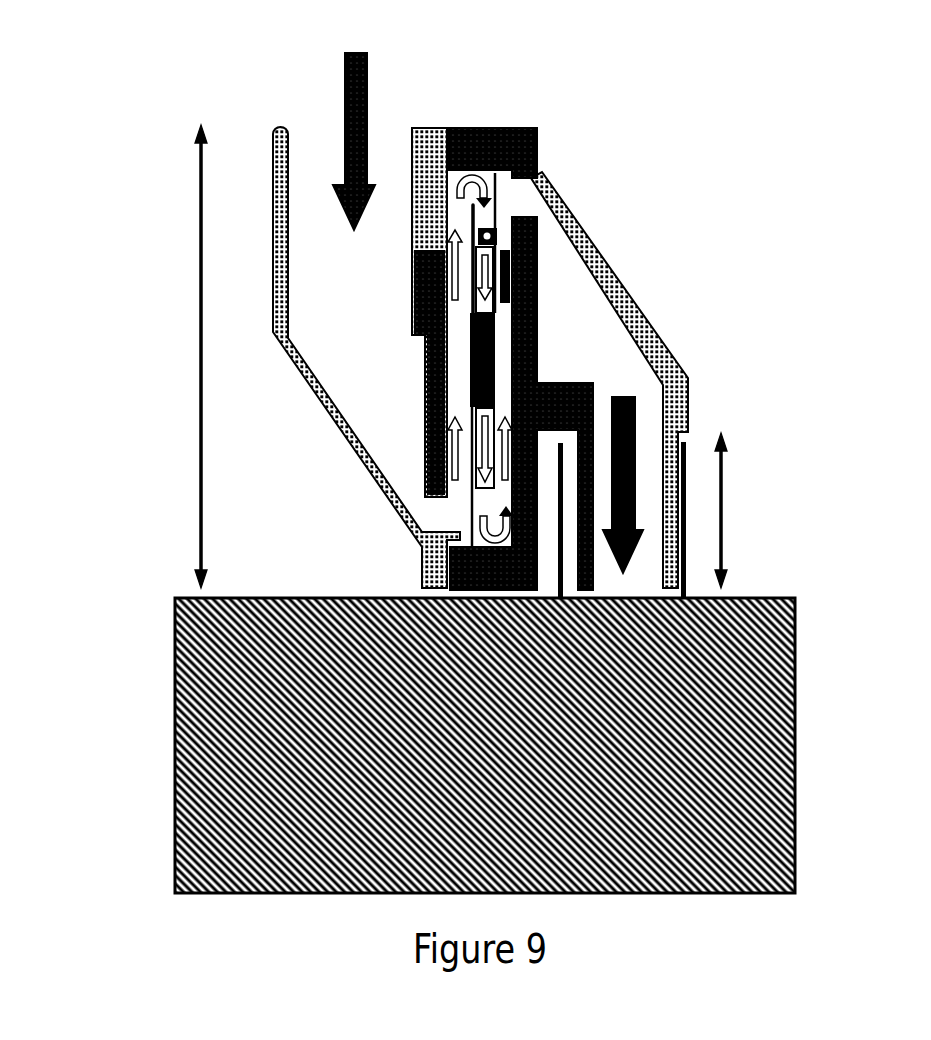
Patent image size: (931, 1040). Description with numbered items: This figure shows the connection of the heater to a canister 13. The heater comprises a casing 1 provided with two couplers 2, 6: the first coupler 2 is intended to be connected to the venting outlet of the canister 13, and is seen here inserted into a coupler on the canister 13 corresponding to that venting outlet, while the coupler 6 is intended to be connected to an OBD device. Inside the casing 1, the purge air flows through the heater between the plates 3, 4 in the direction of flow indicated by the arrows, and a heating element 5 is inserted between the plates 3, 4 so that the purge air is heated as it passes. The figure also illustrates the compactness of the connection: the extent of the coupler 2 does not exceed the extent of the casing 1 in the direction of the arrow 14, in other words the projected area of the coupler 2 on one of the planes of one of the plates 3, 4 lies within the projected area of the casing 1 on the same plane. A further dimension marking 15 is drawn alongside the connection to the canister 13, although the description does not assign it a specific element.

The casing 1 is at (336, 492).
The first coupler 2 is at (684, 398).
The plate 3 is at (483, 216).
The plate 4 is at (495, 412).
The heating element 5 is at (475, 378).
The coupler 6 is at (274, 158).
The canister 13 is at (165, 752).
The arrow 14 is at (188, 327).
The gap dimension 15 is at (724, 515).